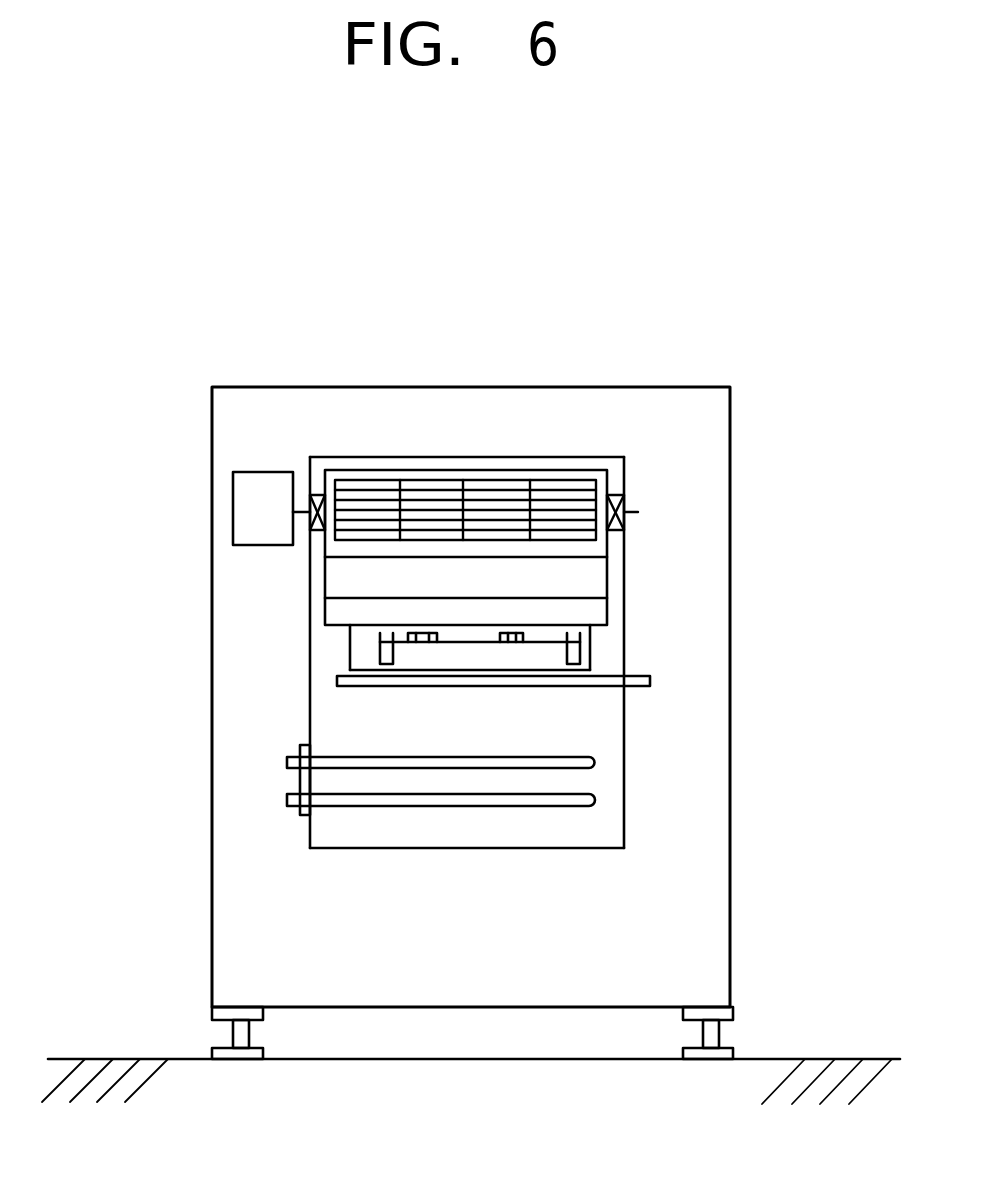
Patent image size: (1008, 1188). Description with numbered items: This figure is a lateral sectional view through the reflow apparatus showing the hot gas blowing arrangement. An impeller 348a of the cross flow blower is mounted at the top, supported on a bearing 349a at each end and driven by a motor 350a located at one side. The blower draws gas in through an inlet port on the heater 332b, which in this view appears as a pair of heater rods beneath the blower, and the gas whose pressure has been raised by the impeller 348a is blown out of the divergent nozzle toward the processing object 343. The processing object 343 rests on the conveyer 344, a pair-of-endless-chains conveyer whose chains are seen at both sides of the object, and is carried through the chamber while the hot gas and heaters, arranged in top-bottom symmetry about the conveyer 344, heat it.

The motor 350a is at (243, 472).
The bearing 349a is at (317, 492).
The impeller 348a is at (434, 487).
The conveyer 344 is at (380, 650).
The processing object 343 is at (545, 657).
The heater 332b is at (500, 805).